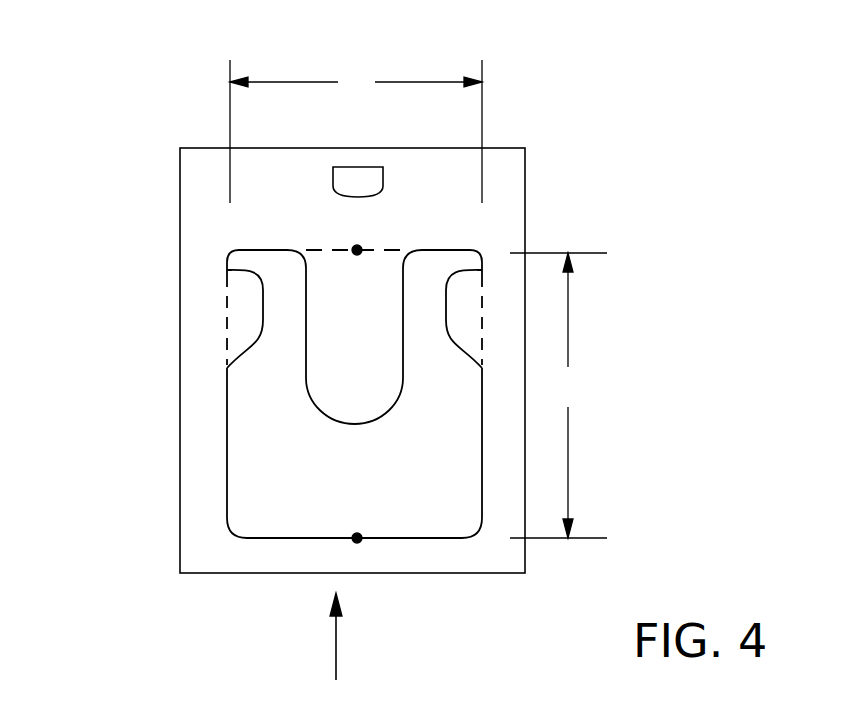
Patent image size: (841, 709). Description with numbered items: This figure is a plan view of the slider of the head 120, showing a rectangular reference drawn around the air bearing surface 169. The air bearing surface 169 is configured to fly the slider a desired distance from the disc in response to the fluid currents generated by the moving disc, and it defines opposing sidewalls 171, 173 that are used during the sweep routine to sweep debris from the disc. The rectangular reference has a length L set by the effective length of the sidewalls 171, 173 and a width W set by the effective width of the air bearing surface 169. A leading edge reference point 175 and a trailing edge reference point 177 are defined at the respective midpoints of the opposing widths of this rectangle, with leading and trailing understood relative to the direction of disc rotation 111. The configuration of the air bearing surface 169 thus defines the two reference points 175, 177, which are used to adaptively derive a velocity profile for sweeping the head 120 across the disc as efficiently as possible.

The head 120 is at (104, 136).
The air bearing surface 169 is at (298, 510).
The sidewall 171 is at (227, 445).
The sidewall 173 is at (483, 427).
The leading edge reference point 175 is at (362, 540).
The trailing edge reference point 177 is at (358, 243).
The direction of disc rotation 111 is at (336, 640).